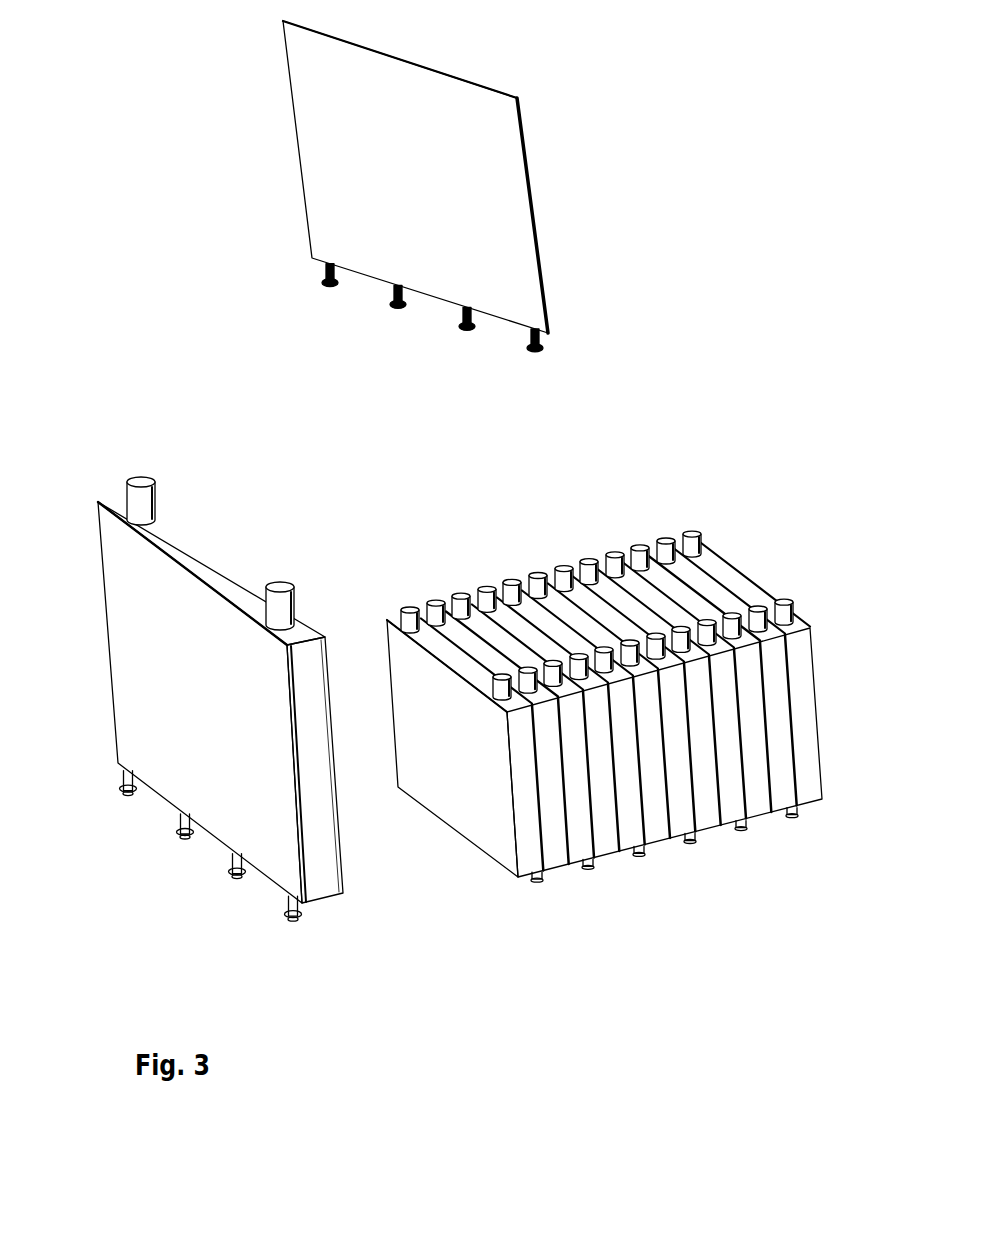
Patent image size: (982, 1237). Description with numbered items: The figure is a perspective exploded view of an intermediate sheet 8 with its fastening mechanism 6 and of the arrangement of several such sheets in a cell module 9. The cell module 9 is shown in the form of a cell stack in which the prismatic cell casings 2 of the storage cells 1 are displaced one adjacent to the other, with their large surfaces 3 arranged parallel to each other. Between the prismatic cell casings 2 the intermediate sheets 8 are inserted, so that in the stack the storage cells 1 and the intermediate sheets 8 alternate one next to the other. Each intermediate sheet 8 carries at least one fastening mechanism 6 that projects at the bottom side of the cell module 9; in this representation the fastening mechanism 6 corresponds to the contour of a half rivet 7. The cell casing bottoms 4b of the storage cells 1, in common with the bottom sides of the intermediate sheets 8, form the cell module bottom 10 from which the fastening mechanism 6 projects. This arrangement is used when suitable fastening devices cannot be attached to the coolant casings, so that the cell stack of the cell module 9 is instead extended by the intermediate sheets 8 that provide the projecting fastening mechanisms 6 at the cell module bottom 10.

The storage cell 1 is at (105, 498).
The prismatic cell casing 2 is at (327, 833).
The large surface 3 is at (430, 772).
The cell casing bottom 4b is at (815, 803).
The fastening mechanism 6 is at (458, 333).
The half rivet 7 is at (244, 883).
The intermediate sheet 8 is at (297, 91).
The cell module 9 is at (608, 692).
The cell module bottom 10 is at (717, 828).